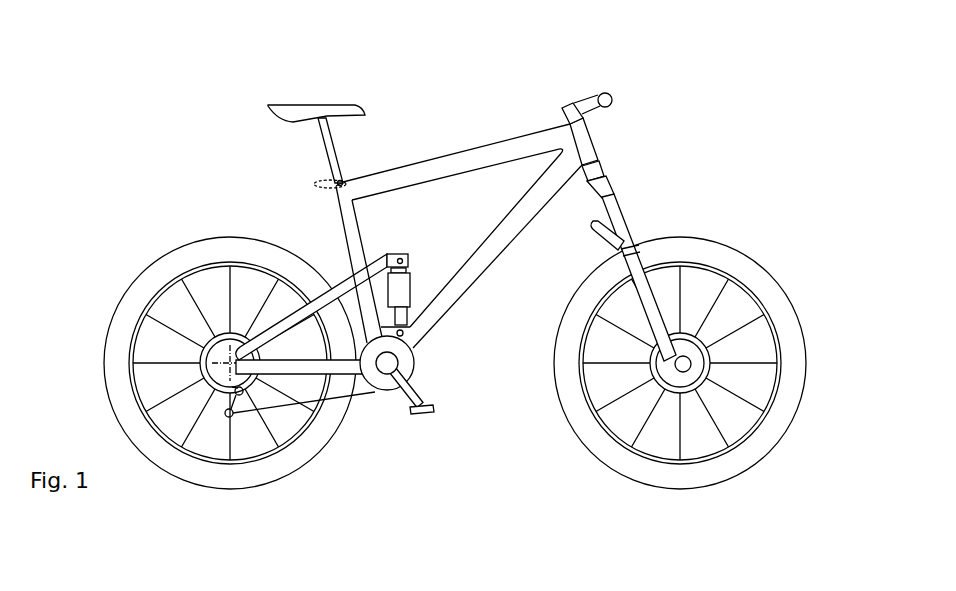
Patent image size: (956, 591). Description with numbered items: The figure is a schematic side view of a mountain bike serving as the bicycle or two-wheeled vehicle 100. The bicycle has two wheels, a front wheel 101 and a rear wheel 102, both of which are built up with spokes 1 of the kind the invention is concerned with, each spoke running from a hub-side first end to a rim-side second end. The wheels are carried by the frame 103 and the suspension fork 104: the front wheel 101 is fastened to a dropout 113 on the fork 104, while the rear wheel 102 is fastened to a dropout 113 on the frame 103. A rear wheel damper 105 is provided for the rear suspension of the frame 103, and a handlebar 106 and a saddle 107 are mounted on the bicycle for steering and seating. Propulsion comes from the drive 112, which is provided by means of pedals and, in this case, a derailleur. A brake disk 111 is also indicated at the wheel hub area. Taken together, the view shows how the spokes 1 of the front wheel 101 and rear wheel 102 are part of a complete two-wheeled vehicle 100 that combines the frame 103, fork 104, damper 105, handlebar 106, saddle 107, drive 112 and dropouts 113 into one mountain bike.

The two-wheeled vehicle 100 is at (462, 200).
The front wheel 101 is at (765, 235).
The rear wheel 102 is at (156, 248).
The frame 103 is at (481, 158).
The suspension fork 104 is at (637, 242).
The rear wheel damper 105 is at (404, 280).
The handlebar 106 is at (609, 93).
The saddle 107 is at (324, 105).
The brake disk 111 is at (707, 375).
The drive 112 is at (415, 433).
The dropout 113 is at (218, 352).
The spoke 1 is at (170, 396).